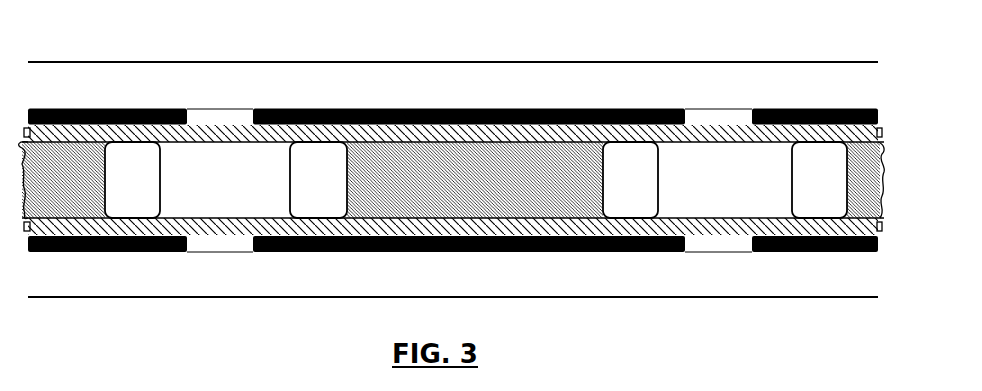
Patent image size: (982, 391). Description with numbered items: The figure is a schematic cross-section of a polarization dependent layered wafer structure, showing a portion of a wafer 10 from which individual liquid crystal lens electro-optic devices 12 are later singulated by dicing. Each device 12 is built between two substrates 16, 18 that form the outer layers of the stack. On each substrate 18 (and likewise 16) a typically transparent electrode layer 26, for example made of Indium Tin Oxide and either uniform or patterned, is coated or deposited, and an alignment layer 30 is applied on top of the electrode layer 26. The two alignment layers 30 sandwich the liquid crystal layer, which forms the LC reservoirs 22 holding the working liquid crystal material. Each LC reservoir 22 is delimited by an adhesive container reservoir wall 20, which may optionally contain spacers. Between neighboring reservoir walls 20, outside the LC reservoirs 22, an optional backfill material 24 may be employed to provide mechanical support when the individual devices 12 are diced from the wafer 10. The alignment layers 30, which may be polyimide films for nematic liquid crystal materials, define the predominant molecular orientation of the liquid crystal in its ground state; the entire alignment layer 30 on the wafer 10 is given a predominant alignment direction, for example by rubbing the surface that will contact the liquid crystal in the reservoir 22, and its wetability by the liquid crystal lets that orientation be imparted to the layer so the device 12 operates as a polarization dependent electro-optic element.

The wafer 10 is at (766, 335).
The LCL optical device 12 is at (687, 47).
The substrate 16 is at (823, 99).
The substrate 18 is at (821, 286).
The container reservoir wall 20 is at (797, 186).
The LC reservoir 22 is at (540, 207).
The material 24 is at (200, 160).
The electrode layer 26 is at (111, 100).
The alignment layer 30 is at (264, 136).